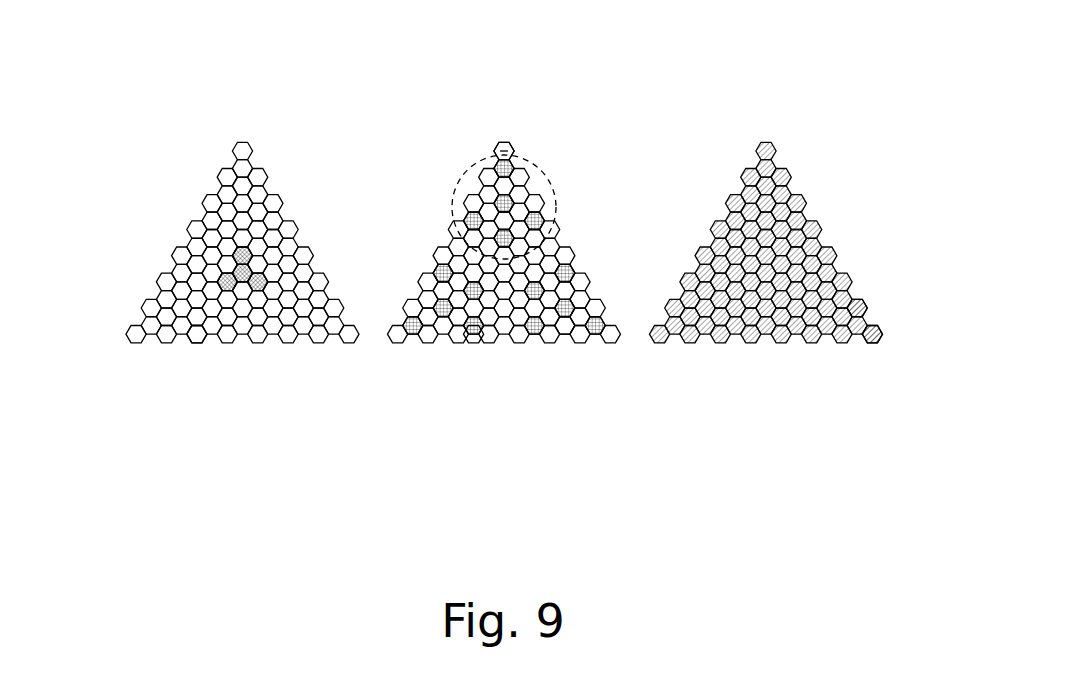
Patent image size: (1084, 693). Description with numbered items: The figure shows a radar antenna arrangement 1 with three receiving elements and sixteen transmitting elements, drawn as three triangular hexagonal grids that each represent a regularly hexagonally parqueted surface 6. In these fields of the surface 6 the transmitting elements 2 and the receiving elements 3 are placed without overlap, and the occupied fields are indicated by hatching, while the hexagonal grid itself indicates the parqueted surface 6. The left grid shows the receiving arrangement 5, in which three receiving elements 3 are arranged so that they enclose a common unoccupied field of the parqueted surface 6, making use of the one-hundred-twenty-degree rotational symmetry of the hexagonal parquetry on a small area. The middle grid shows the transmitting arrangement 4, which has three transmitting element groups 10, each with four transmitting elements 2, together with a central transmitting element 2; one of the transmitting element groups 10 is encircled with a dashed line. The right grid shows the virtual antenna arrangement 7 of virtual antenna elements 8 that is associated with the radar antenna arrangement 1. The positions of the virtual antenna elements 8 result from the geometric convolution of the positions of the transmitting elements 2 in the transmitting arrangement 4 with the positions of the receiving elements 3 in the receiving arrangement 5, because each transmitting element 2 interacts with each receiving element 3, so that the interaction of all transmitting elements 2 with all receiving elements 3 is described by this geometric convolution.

The radar antenna arrangement 1 is at (452, 104).
The transmitting element 2 is at (512, 200).
The receiving element 3 is at (226, 280).
The transmitting arrangement 4 is at (588, 101).
The receiving arrangement 5 is at (203, 131).
The regularly hexagonally parqueted surface 6 is at (198, 343).
The virtual antenna arrangement 7 is at (795, 109).
The virtual antenna element 8 is at (862, 306).
The transmitting element group 10 is at (507, 142).